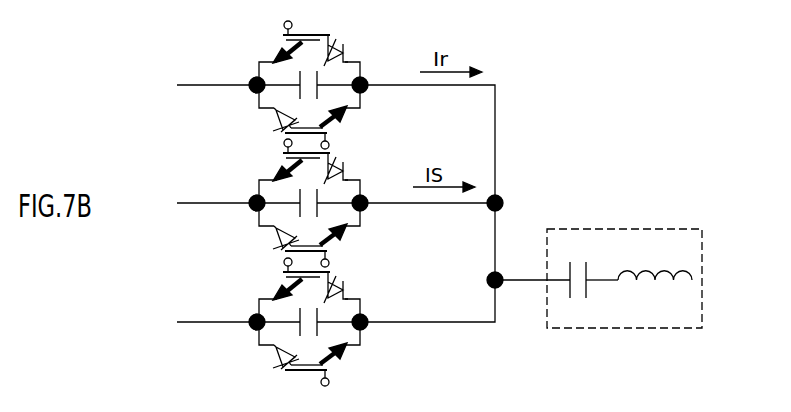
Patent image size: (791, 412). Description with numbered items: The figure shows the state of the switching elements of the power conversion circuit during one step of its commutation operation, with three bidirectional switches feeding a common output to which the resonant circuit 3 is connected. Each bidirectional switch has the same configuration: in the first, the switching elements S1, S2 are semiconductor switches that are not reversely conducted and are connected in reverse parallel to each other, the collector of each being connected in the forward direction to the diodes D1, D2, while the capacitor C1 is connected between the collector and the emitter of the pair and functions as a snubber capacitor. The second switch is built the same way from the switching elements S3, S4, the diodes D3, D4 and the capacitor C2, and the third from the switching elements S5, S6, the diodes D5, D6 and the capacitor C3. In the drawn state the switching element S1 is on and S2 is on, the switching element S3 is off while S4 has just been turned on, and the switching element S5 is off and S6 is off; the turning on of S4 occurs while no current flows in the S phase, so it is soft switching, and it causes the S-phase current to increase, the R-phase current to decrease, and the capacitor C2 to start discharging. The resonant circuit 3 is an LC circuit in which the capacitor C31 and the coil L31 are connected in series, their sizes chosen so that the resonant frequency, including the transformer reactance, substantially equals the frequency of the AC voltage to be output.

The resonant circuit 3 is at (555, 242).
The switching element S1 is at (267, 42).
The switching element S2 is at (349, 127).
The switching element S3 is at (267, 160).
The switching element S4 is at (349, 245).
The switching element S5 is at (267, 279).
The switching element S6 is at (349, 364).
The diode D1 is at (348, 50).
The diode D2 is at (274, 120).
The diode D3 is at (348, 168).
The diode D4 is at (274, 238).
The diode D5 is at (348, 287).
The diode D6 is at (274, 357).
The capacitor C1 is at (298, 89).
The capacitor C2 is at (298, 207).
The capacitor C3 is at (298, 326).
The capacitor C31 is at (578, 294).
The coil L31 is at (639, 298).